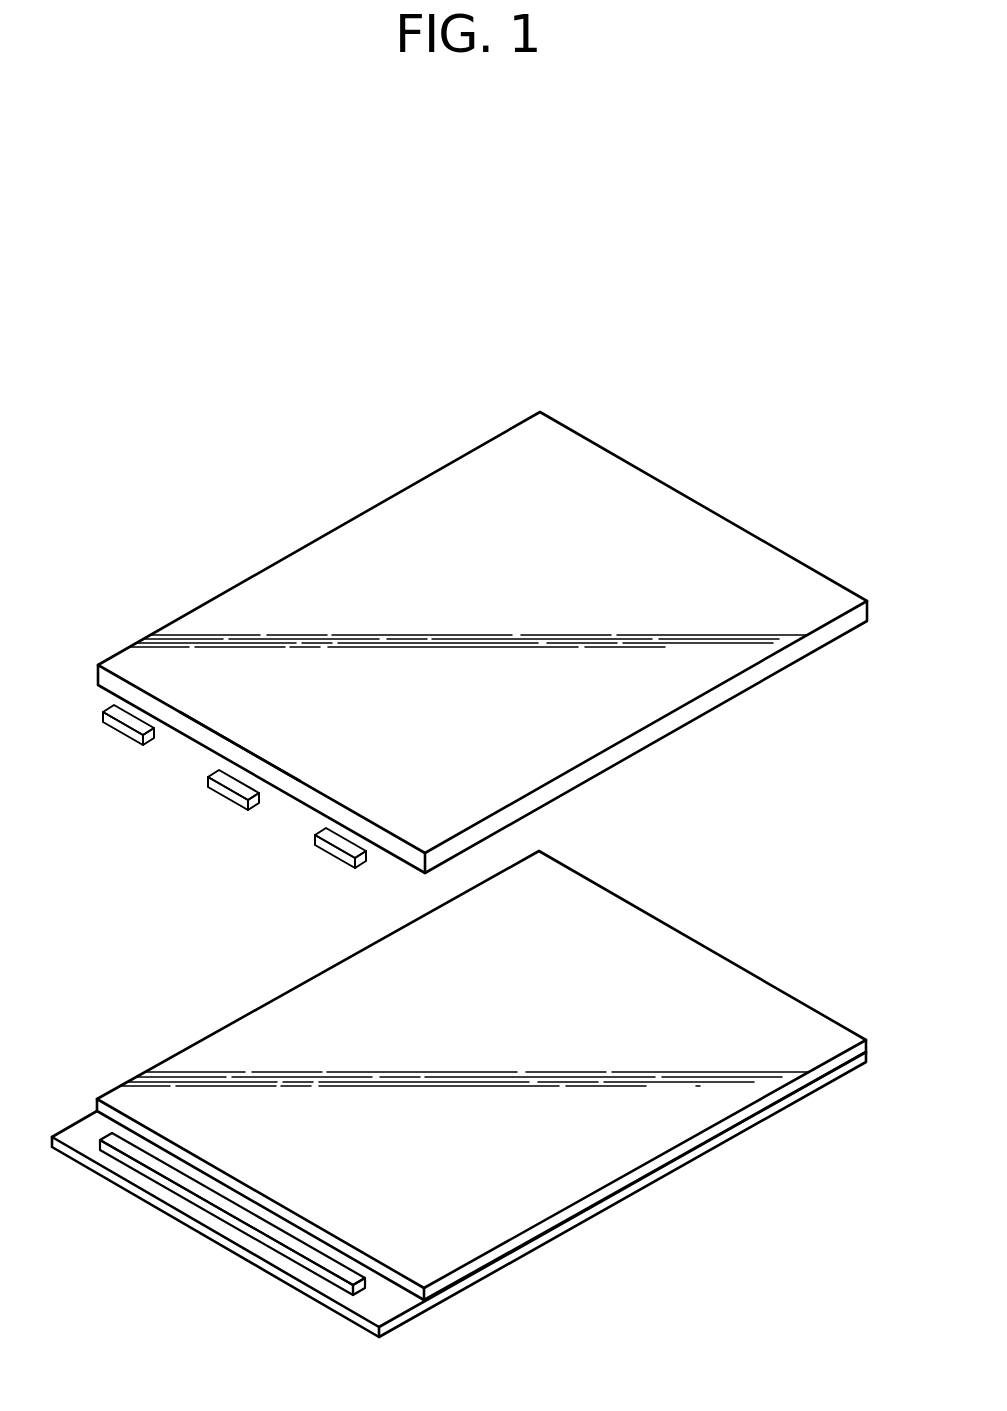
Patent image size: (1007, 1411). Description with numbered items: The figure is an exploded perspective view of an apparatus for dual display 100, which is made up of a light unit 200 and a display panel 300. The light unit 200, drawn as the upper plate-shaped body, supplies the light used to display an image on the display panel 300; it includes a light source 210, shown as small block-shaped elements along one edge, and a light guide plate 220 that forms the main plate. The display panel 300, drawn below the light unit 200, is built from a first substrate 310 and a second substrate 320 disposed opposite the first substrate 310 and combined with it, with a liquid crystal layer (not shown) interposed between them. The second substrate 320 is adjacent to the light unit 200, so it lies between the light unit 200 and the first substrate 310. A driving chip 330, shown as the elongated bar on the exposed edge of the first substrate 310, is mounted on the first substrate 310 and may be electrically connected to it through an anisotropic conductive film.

The apparatus for dual display 100 is at (597, 283).
The light unit 200 is at (718, 480).
The light source 210 is at (130, 720).
The light guide plate 220 is at (233, 722).
The display panel 300 is at (721, 916).
The first substrate 310 is at (377, 1297).
The second substrate 320 is at (433, 1262).
The driving chip 330 is at (188, 1184).